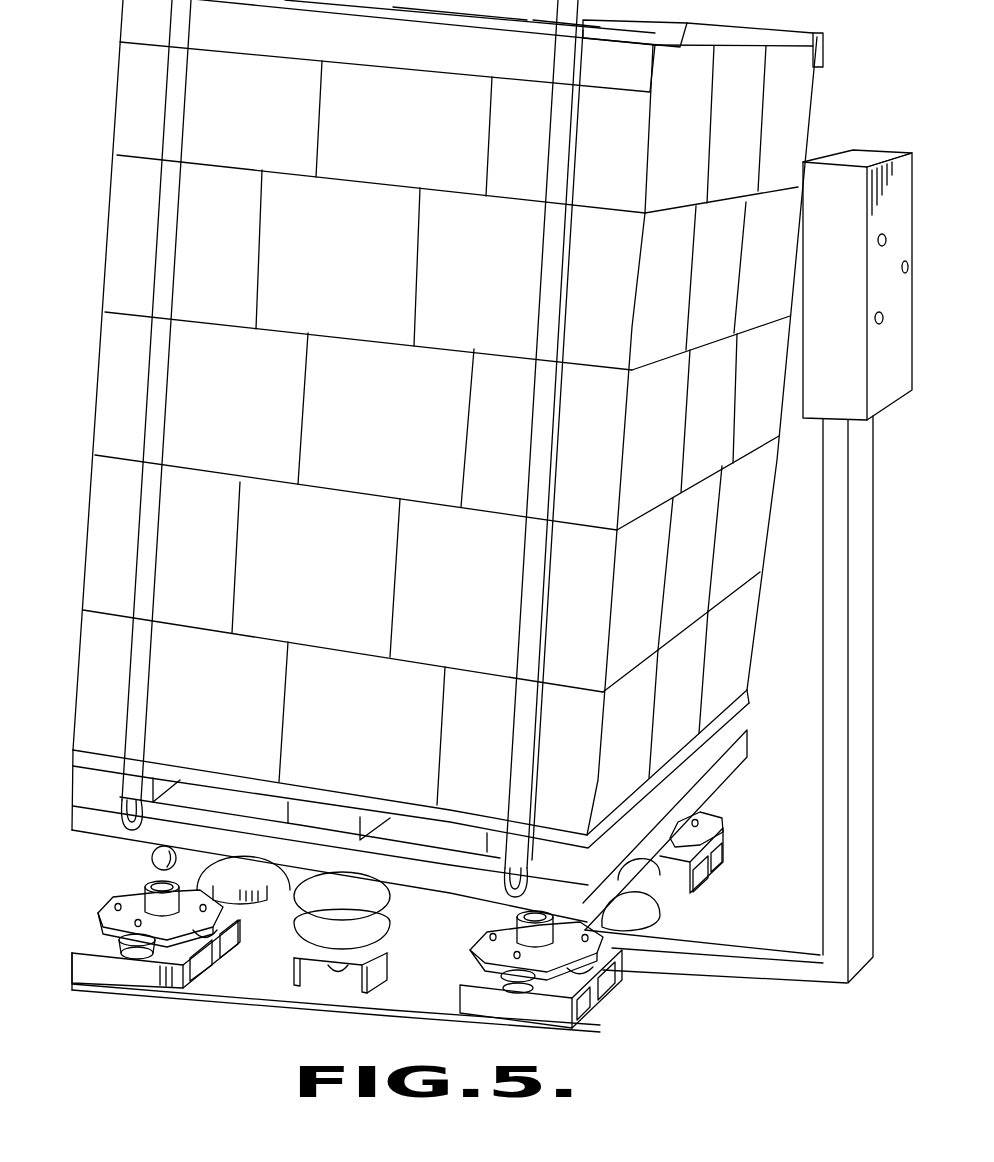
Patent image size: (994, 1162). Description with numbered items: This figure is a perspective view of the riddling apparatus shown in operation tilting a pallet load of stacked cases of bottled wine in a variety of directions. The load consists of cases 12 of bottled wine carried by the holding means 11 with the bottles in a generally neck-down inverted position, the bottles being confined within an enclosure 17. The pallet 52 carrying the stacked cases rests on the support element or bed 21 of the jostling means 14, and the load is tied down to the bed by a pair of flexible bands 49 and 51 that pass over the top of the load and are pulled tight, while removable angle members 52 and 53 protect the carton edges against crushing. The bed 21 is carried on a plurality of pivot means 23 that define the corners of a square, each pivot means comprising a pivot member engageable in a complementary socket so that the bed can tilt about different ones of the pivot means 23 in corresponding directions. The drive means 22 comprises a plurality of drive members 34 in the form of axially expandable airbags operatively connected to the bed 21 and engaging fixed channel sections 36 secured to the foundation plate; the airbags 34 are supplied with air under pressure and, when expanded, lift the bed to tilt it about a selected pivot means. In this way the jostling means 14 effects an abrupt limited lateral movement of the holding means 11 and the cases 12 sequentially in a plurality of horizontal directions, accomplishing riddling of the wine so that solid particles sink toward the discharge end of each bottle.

The holding means 11 is at (90, 839).
The cases 12 is at (483, 405).
The jostling means 14 is at (211, 1005).
The enclosure 17 is at (90, 405).
The support element or bed 21 is at (72, 818).
The drive means 22 is at (70, 923).
The pivot means 23 is at (118, 897).
The drive members 34 is at (387, 927).
The channel sections 36 is at (383, 970).
The flexible band 49 is at (173, 263).
The flexible band 51 is at (549, 278).
The pallet 52 is at (412, 59).
The angle member 53 is at (819, 50).